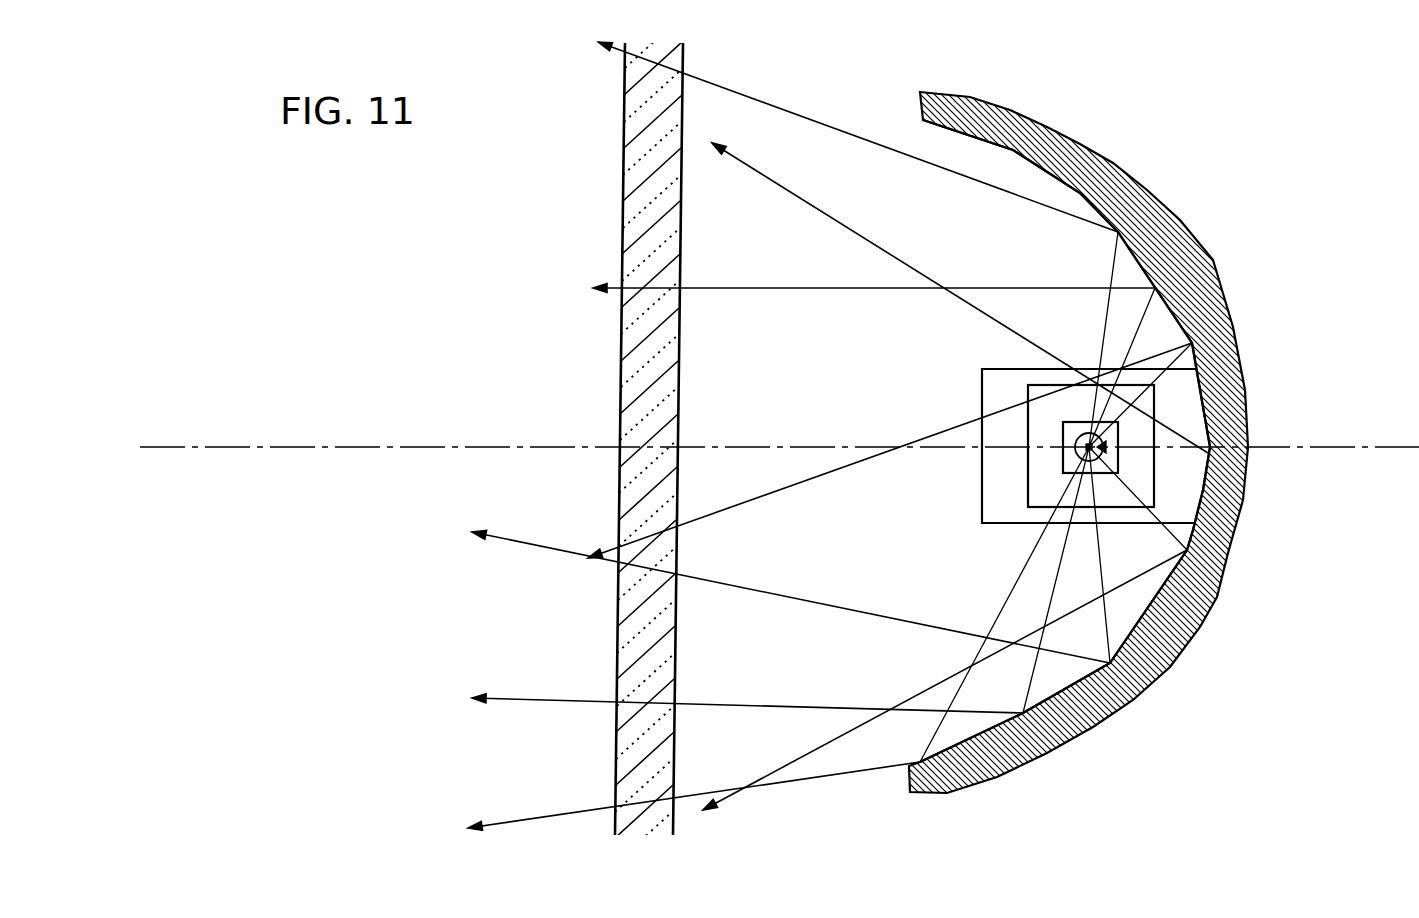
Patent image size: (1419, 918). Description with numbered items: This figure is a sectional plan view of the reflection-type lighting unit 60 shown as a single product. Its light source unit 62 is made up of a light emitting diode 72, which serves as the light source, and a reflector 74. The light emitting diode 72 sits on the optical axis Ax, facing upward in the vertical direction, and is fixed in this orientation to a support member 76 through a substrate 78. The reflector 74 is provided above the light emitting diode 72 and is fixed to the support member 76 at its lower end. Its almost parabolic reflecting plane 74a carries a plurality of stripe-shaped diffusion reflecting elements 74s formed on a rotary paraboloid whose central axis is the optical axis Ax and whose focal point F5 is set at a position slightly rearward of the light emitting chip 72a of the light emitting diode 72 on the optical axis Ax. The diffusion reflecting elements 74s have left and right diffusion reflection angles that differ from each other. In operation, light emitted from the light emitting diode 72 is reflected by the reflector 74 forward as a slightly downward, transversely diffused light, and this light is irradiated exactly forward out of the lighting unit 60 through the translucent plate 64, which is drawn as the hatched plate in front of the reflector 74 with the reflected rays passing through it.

The lighting unit 60 is at (1097, 429).
The light source unit 62 is at (870, 177).
The translucent plate 64 is at (608, 183).
The light emitting diode 72 is at (1050, 425).
The light emitting chip 72a is at (1063, 465).
The reflector 74 is at (1102, 442).
The reflecting plane 74a is at (1145, 274).
The diffusion reflecting elements 74s is at (1067, 690).
The support member 76 is at (965, 365).
The substrate 78 is at (1172, 470).
The focal point F5 is at (1104, 440).
The optical axis Ax is at (298, 440).